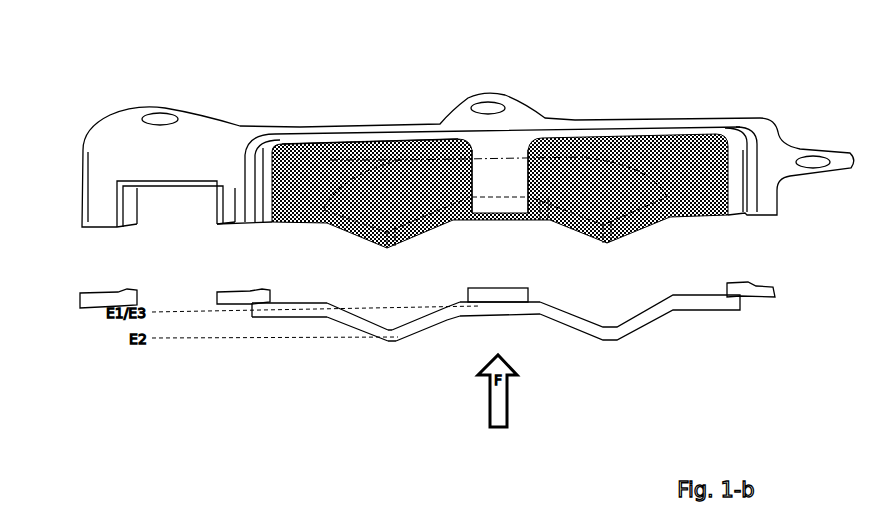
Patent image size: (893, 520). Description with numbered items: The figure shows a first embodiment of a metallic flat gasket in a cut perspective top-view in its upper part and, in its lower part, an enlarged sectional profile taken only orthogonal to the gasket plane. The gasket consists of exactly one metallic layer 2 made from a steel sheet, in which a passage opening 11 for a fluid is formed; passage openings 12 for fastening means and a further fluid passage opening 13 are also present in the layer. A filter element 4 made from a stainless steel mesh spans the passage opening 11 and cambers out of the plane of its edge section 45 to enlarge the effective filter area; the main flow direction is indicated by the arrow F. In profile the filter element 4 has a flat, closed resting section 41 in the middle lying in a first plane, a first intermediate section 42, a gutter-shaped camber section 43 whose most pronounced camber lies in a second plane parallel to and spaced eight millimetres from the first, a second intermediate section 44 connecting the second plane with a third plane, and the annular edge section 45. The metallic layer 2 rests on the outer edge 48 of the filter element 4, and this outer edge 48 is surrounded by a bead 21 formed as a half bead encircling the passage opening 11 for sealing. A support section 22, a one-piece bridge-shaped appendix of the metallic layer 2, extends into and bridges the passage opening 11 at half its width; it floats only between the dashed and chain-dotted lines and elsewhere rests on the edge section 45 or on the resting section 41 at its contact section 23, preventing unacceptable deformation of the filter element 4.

The metallic layer 2 is at (538, 126).
The filter element 4 is at (684, 158).
The passage opening 11 is at (443, 150).
The passage openings for fastening means 12 is at (812, 163).
The further fluid passage opening 13 is at (193, 211).
The bead 21 is at (745, 286).
The support section 22 is at (502, 177).
The contact section 23 is at (508, 291).
The resting section 41 is at (492, 308).
The first intermediate section 42 is at (430, 321).
The camber section 43 is at (391, 339).
The second intermediate section 44 is at (348, 321).
The edge section 45 is at (293, 312).
The outer edge 48 is at (252, 220).